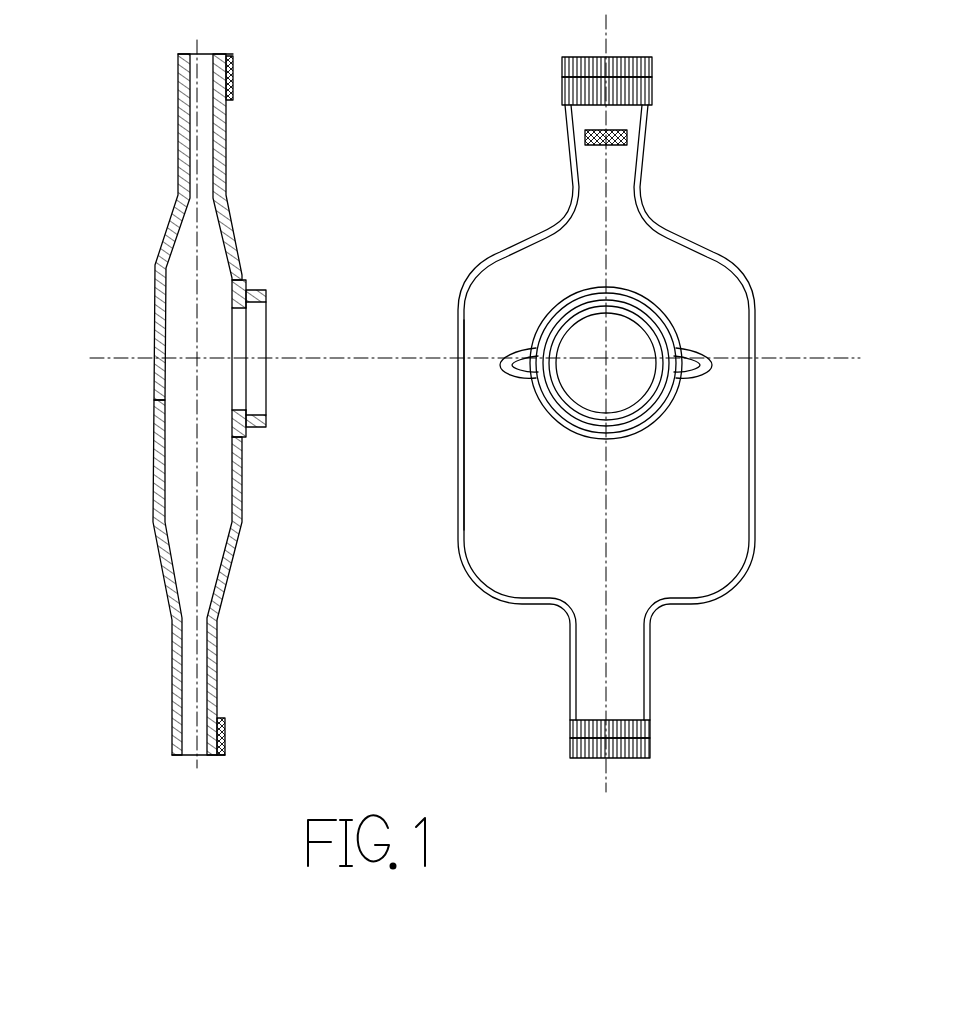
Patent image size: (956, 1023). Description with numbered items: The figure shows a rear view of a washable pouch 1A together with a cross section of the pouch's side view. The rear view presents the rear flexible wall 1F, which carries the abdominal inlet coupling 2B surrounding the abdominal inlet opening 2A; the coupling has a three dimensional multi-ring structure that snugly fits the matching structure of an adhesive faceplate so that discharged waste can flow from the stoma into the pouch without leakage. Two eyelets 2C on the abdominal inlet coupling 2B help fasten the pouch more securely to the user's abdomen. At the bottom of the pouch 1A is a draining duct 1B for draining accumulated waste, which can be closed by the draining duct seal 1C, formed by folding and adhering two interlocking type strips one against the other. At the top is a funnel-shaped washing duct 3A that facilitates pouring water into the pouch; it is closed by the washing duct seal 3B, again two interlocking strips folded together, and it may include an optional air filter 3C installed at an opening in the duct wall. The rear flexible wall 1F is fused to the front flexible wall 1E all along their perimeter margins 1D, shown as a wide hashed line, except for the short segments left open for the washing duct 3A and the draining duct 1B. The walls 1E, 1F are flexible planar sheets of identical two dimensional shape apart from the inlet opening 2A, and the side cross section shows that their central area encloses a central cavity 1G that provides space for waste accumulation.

The washable pouch 1A is at (527, 405).
The draining duct 1B is at (590, 665).
The draining duct seal 1C is at (225, 730).
The perimeter margins 1D is at (490, 256).
The front flexible wall 1E is at (166, 240).
The rear flexible wall 1F is at (228, 214).
The central cavity 1G is at (180, 447).
The abdominal inlet opening 2A is at (242, 386).
The abdominal inlet coupling 2B is at (268, 292).
The eyelets 2C is at (505, 370).
The washing duct 3A is at (600, 182).
The washing duct seal 3B is at (233, 65).
The air filter 3C is at (585, 137).